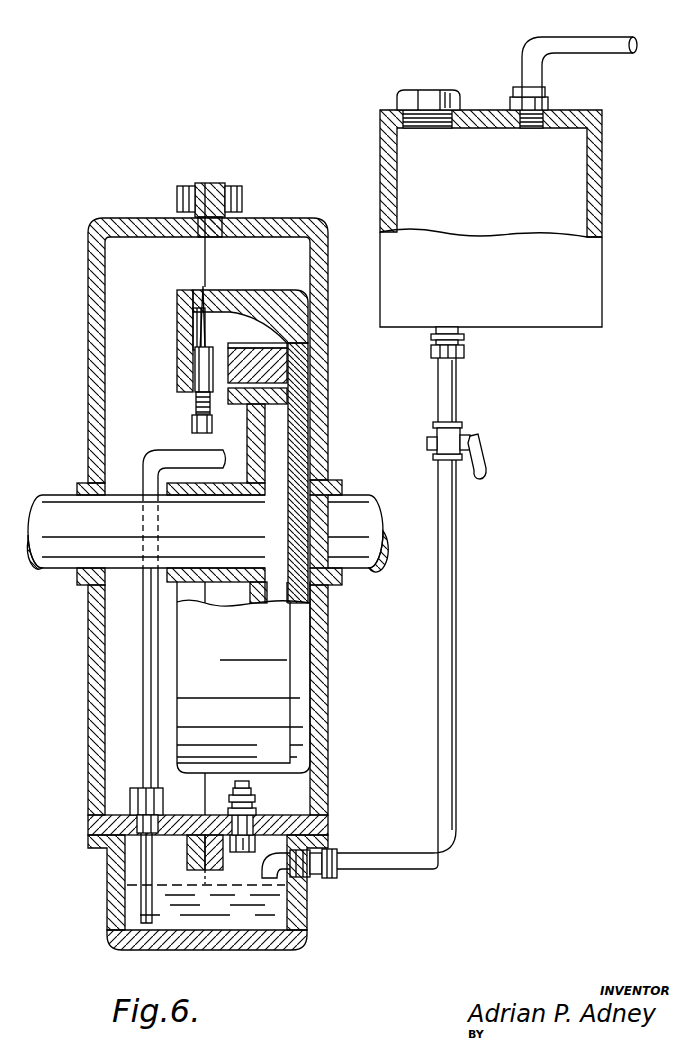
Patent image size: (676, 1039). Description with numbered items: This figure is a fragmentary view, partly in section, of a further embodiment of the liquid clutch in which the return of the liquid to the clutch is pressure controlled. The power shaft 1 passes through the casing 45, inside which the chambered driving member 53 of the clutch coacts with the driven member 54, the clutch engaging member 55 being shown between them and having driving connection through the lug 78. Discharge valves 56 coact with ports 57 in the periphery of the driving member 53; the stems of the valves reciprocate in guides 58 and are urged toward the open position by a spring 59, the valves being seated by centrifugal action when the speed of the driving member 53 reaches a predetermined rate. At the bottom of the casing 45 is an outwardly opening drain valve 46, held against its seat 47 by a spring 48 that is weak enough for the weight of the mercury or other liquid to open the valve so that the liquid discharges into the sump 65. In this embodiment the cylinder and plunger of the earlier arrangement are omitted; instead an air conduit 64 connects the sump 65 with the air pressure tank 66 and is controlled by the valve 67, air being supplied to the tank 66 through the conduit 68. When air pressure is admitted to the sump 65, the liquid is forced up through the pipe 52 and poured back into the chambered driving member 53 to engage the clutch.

The power shaft 1 is at (374, 516).
The casing 45 is at (322, 409).
The drain valve 46 is at (246, 851).
The seat 47 is at (258, 822).
The spring 48 is at (300, 748).
The pipe 52 is at (153, 662).
The chambered driving member 53 is at (303, 462).
The driven member 54 is at (267, 444).
The clutch engaging member 55 is at (284, 363).
The discharge valve 56 is at (194, 333).
The port 57 is at (200, 291).
The guide 58 is at (194, 373).
The spring 59 is at (198, 408).
The air conduit 64 is at (458, 608).
The sump 65 is at (282, 903).
The air pressure tank 66 is at (532, 318).
The valve 67 is at (478, 441).
The conduit 68 is at (591, 48).
The lug 78 is at (246, 322).